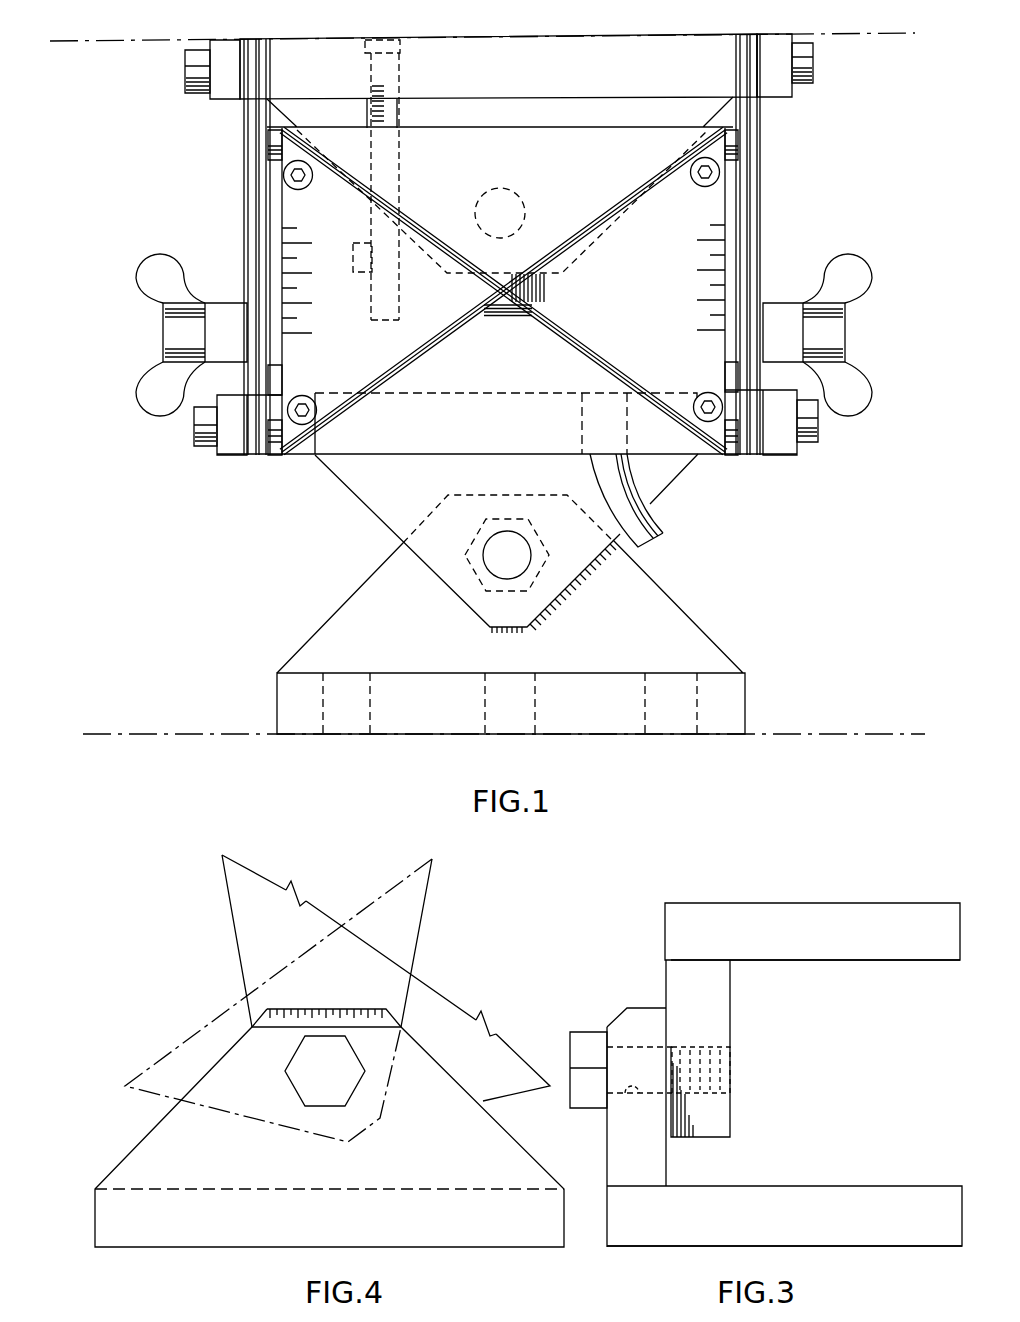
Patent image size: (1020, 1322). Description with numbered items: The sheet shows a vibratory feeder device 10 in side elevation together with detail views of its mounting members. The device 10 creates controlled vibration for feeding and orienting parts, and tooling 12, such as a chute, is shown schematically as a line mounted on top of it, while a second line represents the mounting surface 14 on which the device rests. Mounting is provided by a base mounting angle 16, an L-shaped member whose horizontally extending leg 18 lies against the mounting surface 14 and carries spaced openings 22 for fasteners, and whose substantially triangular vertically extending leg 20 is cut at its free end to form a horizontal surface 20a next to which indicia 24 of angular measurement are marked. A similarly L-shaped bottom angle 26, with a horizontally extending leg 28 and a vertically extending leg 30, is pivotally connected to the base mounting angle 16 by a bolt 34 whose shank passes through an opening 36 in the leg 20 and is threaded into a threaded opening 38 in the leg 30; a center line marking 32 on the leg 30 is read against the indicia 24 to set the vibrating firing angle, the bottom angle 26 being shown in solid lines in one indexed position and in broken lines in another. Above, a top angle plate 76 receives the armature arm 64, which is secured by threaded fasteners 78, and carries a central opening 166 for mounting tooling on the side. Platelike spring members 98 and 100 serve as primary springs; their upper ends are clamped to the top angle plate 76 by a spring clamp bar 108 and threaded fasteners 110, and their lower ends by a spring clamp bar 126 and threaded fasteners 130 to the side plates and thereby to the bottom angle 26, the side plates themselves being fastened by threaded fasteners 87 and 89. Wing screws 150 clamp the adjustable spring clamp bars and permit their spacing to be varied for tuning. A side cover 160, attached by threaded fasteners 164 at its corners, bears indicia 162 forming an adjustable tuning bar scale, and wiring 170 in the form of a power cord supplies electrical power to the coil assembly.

In FIG. 1, the vibratory feeder device 10 is at (358, 505).
In FIG. 1, the tooling 12 is at (118, 36).
In FIG. 1, the mounting surface 14 is at (186, 738).
In FIG. 1, the base mounting angle 16 is at (699, 619).
In FIG. 4, the base mounting angle 16 is at (124, 1155).
In FIG. 3, the base mounting angle 16 is at (662, 1250).
In FIG. 3, the horizontally extending leg 18 is at (811, 1185).
In FIG. 3, the vertically extending leg 20 is at (607, 1124).
In FIG. 3, the horizontal surface 20a is at (634, 998).
In FIG. 1, the openings 22 is at (696, 704).
In FIG. 4, the indicia 24 is at (320, 1007).
In FIG. 3, the bottom angle 26 is at (780, 895).
In FIG. 3, the horizontally extending leg 28 is at (865, 961).
In FIG. 3, the vertically extending leg 30 is at (730, 1017).
In FIG. 4, the center line marking 32 is at (377, 980).
In FIG. 4, the bolt 34 is at (293, 1091).
In FIG. 3, the bolt 34 is at (583, 1031).
In FIG. 3, the opening 36 is at (640, 1100).
In FIG. 3, the threaded opening 38 is at (686, 1046).
In FIG. 1, the armature arm 64 is at (398, 118).
In FIG. 1, the top angle plate 76 is at (563, 72).
In FIG. 1, the threaded fasteners 78 is at (392, 83).
In FIG. 1, the threaded fasteners 87 is at (268, 150).
In FIG. 1, the threaded fasteners 89 is at (277, 456).
In FIG. 1, the spring member 98 is at (262, 217).
In FIG. 1, the spring member 100 is at (244, 186).
In FIG. 1, the spring clamp bar 108 is at (228, 100).
In FIG. 1, the threaded fasteners 110 is at (185, 72).
In FIG. 1, the spring clamp bar 126 is at (231, 457).
In FIG. 1, the threaded fasteners 130 is at (190, 437).
In FIG. 1, the wing screws 150 is at (143, 295).
In FIG. 1, the side cover 160 is at (526, 367).
In FIG. 1, the indicia 162 is at (331, 314).
In FIG. 1, the threaded fasteners 164 is at (700, 187).
In FIG. 1, the opening 166 is at (507, 190).
In FIG. 1, the wiring 170 is at (665, 516).